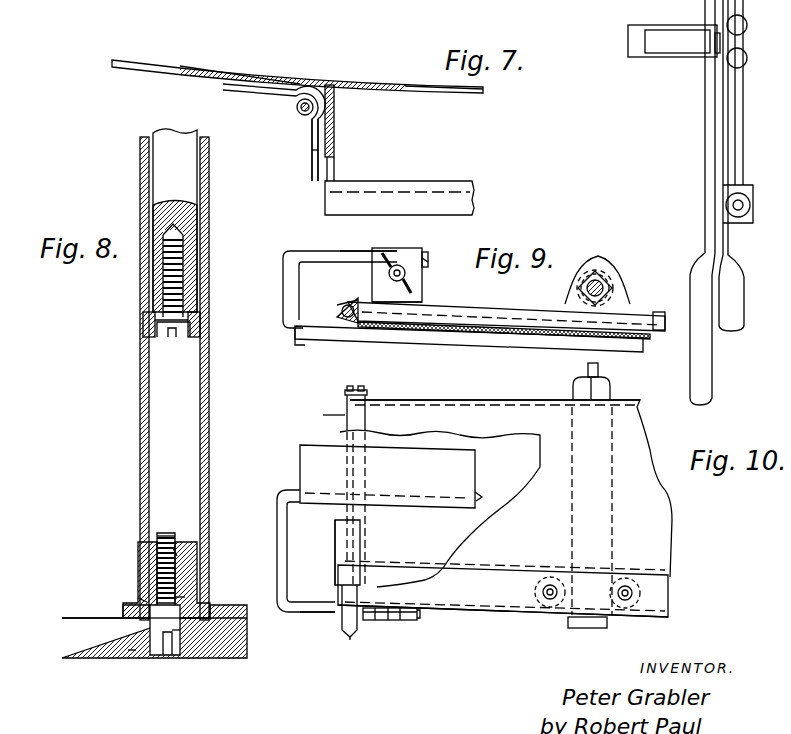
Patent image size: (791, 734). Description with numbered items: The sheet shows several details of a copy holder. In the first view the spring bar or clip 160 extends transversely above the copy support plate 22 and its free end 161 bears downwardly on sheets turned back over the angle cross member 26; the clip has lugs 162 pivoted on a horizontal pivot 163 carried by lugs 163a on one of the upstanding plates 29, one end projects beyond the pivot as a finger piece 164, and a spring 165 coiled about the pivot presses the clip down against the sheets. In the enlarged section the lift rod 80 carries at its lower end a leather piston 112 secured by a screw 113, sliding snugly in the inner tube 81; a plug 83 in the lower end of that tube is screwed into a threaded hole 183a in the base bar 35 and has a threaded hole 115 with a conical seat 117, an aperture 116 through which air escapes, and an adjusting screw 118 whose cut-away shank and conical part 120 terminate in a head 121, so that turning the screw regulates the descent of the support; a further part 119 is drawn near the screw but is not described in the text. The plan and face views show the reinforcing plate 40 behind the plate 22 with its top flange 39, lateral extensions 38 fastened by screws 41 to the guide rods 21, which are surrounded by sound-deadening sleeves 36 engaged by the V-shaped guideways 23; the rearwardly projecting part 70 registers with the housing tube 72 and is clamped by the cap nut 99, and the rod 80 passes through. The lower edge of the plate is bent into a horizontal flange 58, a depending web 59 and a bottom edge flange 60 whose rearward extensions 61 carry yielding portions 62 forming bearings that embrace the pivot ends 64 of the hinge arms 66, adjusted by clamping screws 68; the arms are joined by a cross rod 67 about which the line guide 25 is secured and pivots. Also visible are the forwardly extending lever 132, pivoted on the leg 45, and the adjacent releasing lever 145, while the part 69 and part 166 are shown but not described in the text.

In FIG. 10, the guide rods 21 is at (352, 632).
In FIG. 7, the copy support plate 22 is at (400, 203).
In FIG. 9, the copy support plate 22 is at (647, 336).
In FIG. 10, the copy support plate 22 is at (506, 493).
In FIG. 9, the guideways 23 is at (337, 305).
In FIG. 10, the guideways 23 is at (337, 535).
In FIG. 9, the line guide 25 is at (435, 335).
In FIG. 10, the line guide 25 is at (387, 476).
In FIG. 7, the cross member 26 is at (413, 180).
In FIG. 7, the upstanding plate 29 is at (336, 145).
In FIG. 8, the base bar 35 is at (72, 617).
In FIG. 10, the tubular sleeves 36 is at (348, 630).
In FIG. 9, the lateral extensions 38 is at (363, 297).
In FIG. 10, the lateral extensions 38 is at (347, 395).
In FIG. 9, the top flange 39 is at (500, 315).
In FIG. 10, the top flange 39 is at (467, 397).
In FIG. 9, the reinforcing plate 40 is at (533, 325).
In FIG. 10, the reinforcing plate 40 is at (609, 511).
In FIG. 9, the screws 41 is at (347, 320).
In FIG. 10, the screws 41 is at (367, 392).
In FIG. 10, the leg 45 is at (730, 123).
In FIG. 9, the horizontal flange 58 is at (658, 313).
In FIG. 10, the horizontal flange 58 is at (647, 573).
In FIG. 10, the depending web 59 is at (653, 588).
In FIG. 9, the bottom edge flange 60 is at (452, 292).
In FIG. 10, the bottom edge flange 60 is at (668, 610).
In FIG. 9, the rearward extensions 61 is at (397, 298).
In FIG. 10, the yielding portions 62 is at (368, 620).
In FIG. 9, the pivot ends 64 is at (356, 240).
In FIG. 10, the pivot ends 64 is at (318, 608).
In FIG. 9, the hinge arms 66 is at (281, 283).
In FIG. 10, the hinge arms 66 is at (290, 587).
In FIG. 9, the cross rod 67 is at (295, 335).
In FIG. 10, the cross rod 67 is at (483, 495).
In FIG. 9, the clamping screws 68 is at (415, 252).
In FIG. 10, the clamping screws 68 is at (392, 622).
In FIG. 9, the tab 69 is at (422, 267).
In FIG. 9, the rearwardly projecting part 70 is at (583, 264).
In FIG. 9, the housing tube 72 is at (614, 286).
In FIG. 10, the housing tube 72 is at (568, 620).
In FIG. 8, the lift rod 80 is at (175, 220).
In FIG. 9, the lift rod 80 is at (596, 283).
In FIG. 10, the lift rod 80 is at (587, 367).
In FIG. 8, the inner tube 81 is at (134, 398).
In FIG. 8, the plug 83 is at (193, 572).
In FIG. 9, the cap nut 99 is at (606, 282).
In FIG. 8, the piston 112 is at (200, 337).
In FIG. 8, the screw 113 is at (158, 337).
In FIG. 8, the screw-threaded hole 115 is at (180, 553).
In FIG. 8, the aperture 116 is at (168, 650).
In FIG. 8, the conical seat 117 is at (147, 600).
In FIG. 8, the adjusting screw 118 is at (175, 597).
In FIG. 8, the washer plate 119 is at (156, 537).
In FIG. 8, the conical part 120 is at (177, 553).
In FIG. 8, the screw head 121 is at (170, 640).
In FIG. 10, the lever 132 is at (705, 98).
In FIG. 10, the releasing lever 145 is at (744, 153).
In FIG. 7, the spring clip 160 is at (297, 73).
In FIG. 7, the free end 161 is at (413, 90).
In FIG. 7, the lugs 162 is at (297, 102).
In FIG. 7, the pivot 163 is at (304, 116).
In FIG. 7, the pivot lugs 163a is at (312, 152).
In FIG. 7, the finger piece 164 is at (215, 70).
In FIG. 7, the spring 165 is at (262, 94).
In FIG. 10, the head fitting 166 is at (675, 27).
In FIG. 8, the threaded hole 183a is at (133, 653).